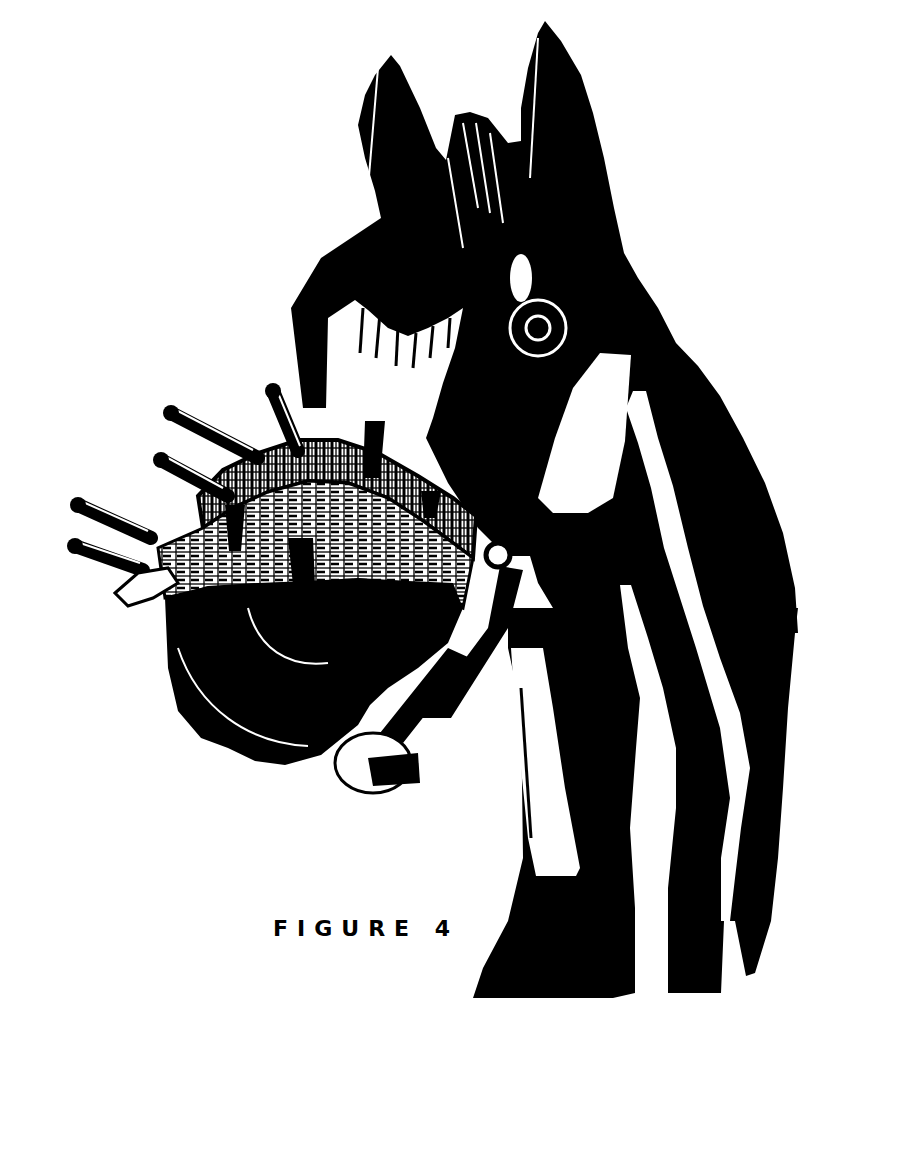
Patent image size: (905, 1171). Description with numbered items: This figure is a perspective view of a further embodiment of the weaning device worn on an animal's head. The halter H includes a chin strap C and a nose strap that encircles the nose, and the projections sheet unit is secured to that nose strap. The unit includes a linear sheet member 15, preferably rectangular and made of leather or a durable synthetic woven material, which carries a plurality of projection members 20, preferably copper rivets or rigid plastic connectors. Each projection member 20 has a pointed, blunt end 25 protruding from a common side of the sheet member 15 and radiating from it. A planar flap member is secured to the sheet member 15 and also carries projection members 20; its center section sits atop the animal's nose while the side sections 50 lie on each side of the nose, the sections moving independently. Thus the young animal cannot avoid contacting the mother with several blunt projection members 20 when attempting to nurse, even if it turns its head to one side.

The linear sheet member 15 is at (347, 430).
The projection members 20 is at (243, 400).
The pointed, blunt end 25 is at (153, 452).
The side sections 50 is at (110, 582).
The halter H is at (683, 355).
The chin strap C is at (475, 700).